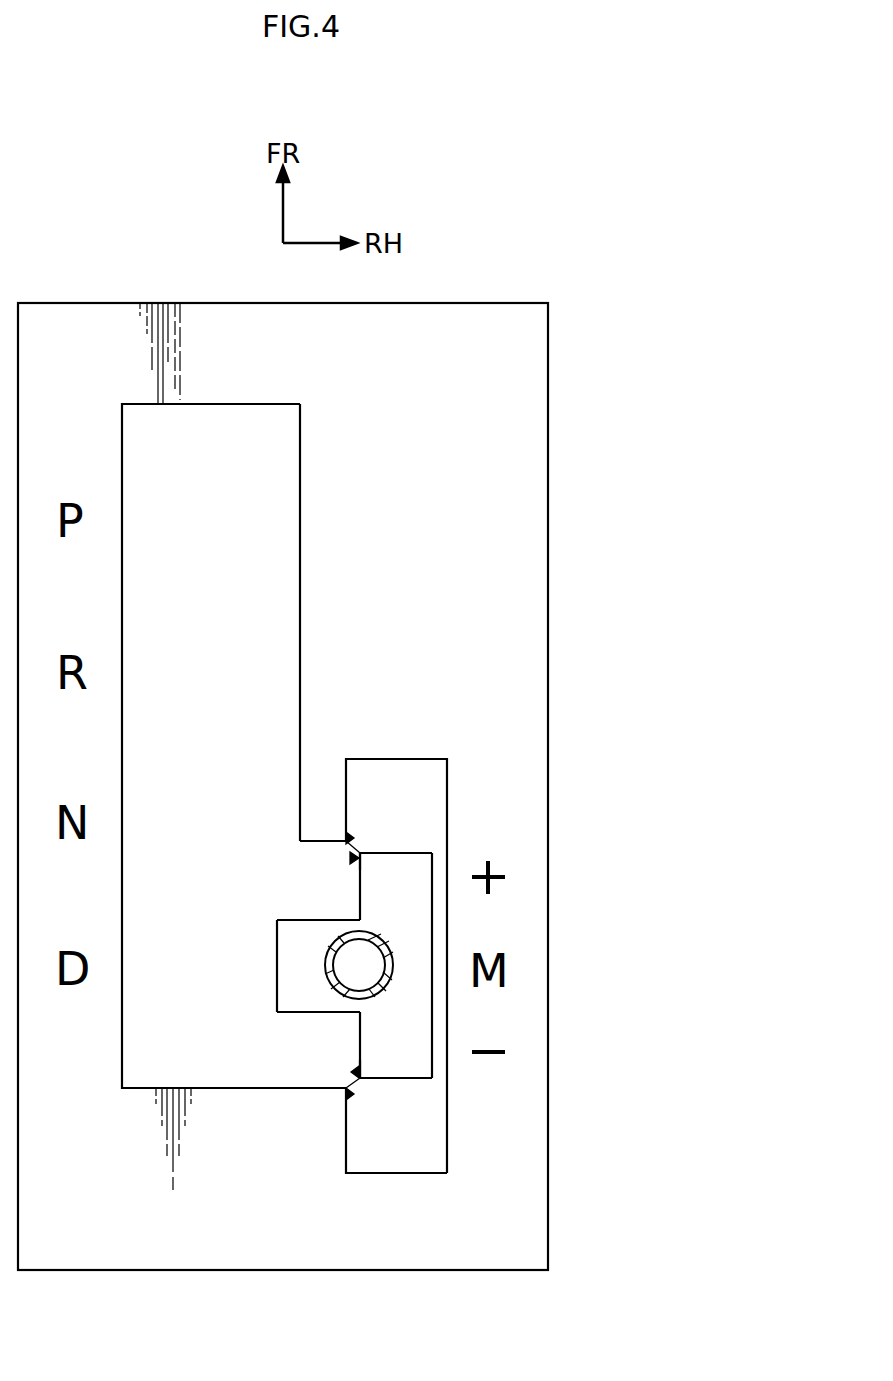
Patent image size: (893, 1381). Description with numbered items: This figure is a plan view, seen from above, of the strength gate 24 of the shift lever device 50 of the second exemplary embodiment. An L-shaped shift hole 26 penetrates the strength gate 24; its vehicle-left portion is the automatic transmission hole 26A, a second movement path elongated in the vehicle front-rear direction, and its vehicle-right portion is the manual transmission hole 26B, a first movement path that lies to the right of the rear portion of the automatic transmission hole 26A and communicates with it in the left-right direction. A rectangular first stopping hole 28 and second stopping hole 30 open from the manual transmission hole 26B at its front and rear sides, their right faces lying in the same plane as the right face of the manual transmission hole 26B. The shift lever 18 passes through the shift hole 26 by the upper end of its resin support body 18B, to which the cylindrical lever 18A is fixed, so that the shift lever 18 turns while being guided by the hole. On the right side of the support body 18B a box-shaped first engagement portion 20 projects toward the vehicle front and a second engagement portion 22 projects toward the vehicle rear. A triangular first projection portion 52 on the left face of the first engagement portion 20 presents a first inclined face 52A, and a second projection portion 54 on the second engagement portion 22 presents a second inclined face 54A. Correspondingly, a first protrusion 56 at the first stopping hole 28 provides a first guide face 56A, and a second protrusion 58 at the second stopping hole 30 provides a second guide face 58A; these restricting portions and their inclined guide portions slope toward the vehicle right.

The strength gate 24 is at (283, 725).
The shift lever device 50 is at (283, 786).
The shift hole 26 is at (211, 405).
The automatic transmission hole 26A is at (296, 574).
The manual transmission hole 26B is at (434, 908).
The first stopping hole 28 is at (392, 760).
The second stopping hole 30 is at (389, 1172).
The first engagement portion 20 is at (452, 955).
The second engagement portion 22 is at (395, 1081).
The shift lever 18 is at (267, 956).
The lever 18A is at (275, 919).
The support body 18B is at (301, 1011).
The first projection portion 52 is at (350, 858).
The first inclined face 52A is at (362, 853).
The second projection portion 54 is at (352, 1072).
The second inclined face 54A is at (358, 1081).
The first protrusion 56 is at (351, 838).
The first guide face 56A is at (353, 848).
The second protrusion 58 is at (352, 1096).
The second guide face 58A is at (352, 1083).